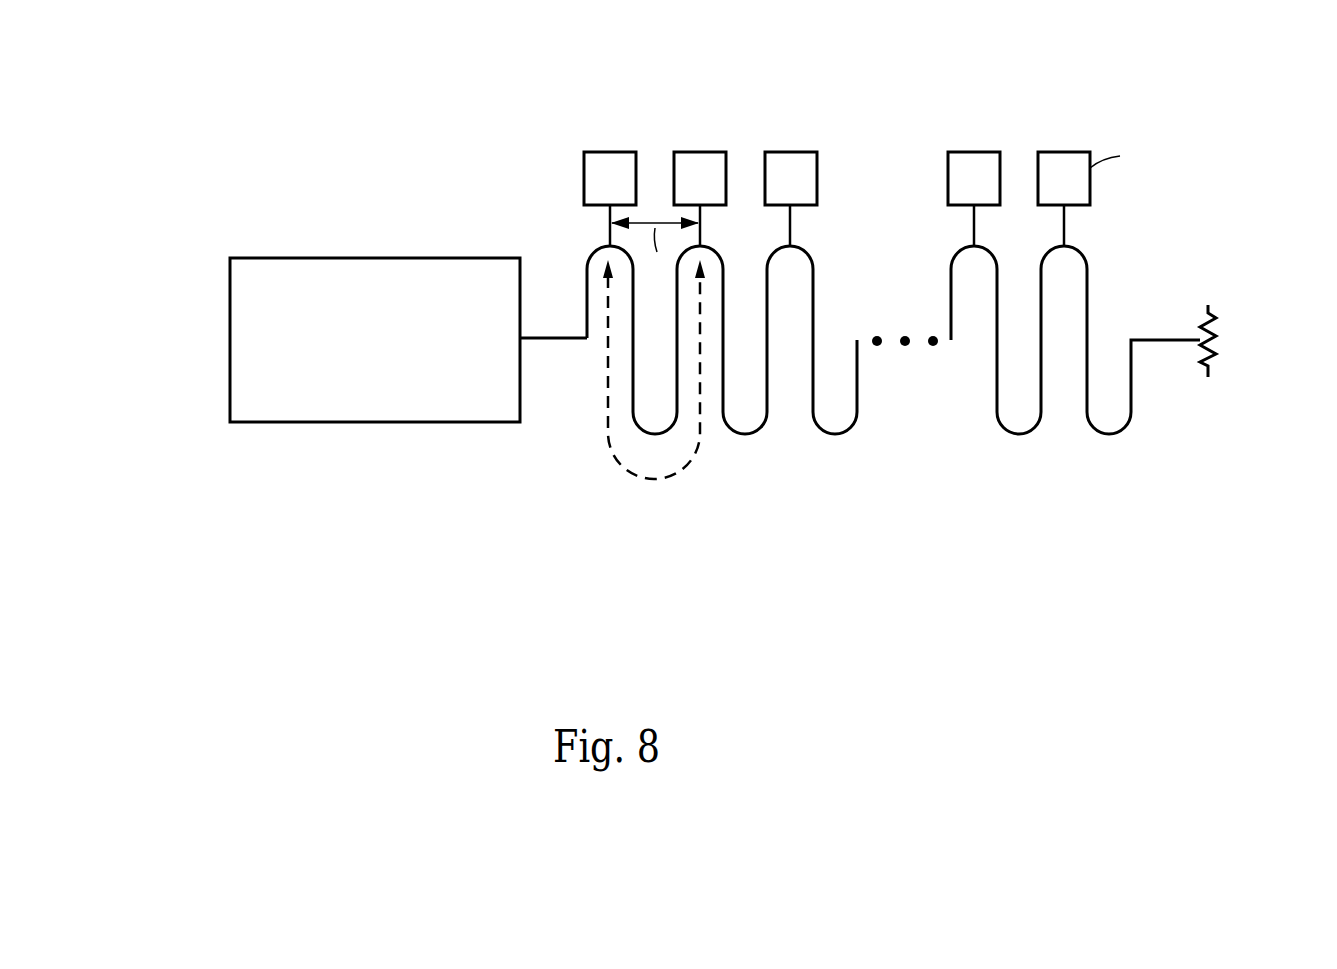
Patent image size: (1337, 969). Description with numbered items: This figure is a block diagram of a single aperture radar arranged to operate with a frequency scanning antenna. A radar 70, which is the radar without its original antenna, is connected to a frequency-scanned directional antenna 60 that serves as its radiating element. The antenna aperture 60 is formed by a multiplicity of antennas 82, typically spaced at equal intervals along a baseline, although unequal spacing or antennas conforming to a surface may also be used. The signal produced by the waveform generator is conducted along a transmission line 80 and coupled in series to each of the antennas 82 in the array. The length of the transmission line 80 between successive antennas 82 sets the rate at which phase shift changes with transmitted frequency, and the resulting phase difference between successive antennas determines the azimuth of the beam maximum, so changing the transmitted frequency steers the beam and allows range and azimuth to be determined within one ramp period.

The frequency-scanned directional antenna 60 is at (941, 364).
The radar 70 is at (230, 390).
The transmission line 80 is at (755, 440).
The antennas 82 is at (612, 152).